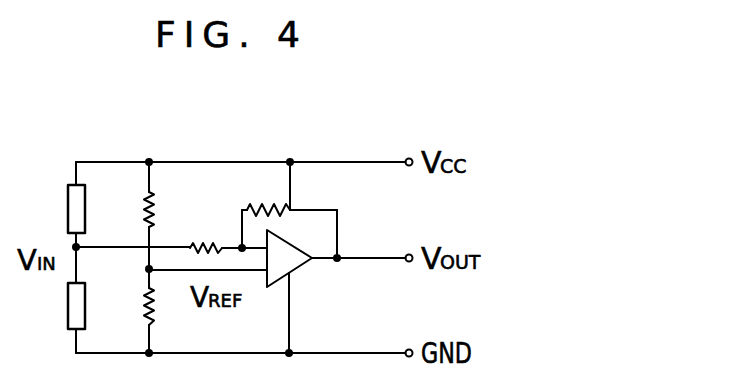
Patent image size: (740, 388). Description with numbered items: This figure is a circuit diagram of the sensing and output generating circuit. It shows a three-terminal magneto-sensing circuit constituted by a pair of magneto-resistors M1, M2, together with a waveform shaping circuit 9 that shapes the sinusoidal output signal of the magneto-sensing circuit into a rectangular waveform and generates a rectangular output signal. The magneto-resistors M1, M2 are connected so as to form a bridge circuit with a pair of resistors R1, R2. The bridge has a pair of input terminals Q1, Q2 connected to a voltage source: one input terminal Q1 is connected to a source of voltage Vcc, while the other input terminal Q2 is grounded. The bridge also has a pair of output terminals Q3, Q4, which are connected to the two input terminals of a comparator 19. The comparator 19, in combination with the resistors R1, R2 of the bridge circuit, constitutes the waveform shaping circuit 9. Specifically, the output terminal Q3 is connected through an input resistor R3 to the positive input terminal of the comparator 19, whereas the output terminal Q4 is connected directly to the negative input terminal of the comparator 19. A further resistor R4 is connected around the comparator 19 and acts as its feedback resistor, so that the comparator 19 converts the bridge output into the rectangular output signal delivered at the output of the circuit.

The waveform shaping circuit 9 is at (288, 144).
The comparator 19 is at (296, 268).
The magneto-resistor M1 is at (67, 210).
The magneto-resistor M2 is at (67, 296).
The resistor R1 is at (143, 207).
The resistor R2 is at (143, 298).
The input resistor R3 is at (205, 245).
The feedback resistor R4 is at (258, 207).
The input terminal Q1 is at (149, 161).
The input terminal Q2 is at (148, 355).
The output terminal Q3 is at (77, 248).
The output terminal Q4 is at (148, 268).